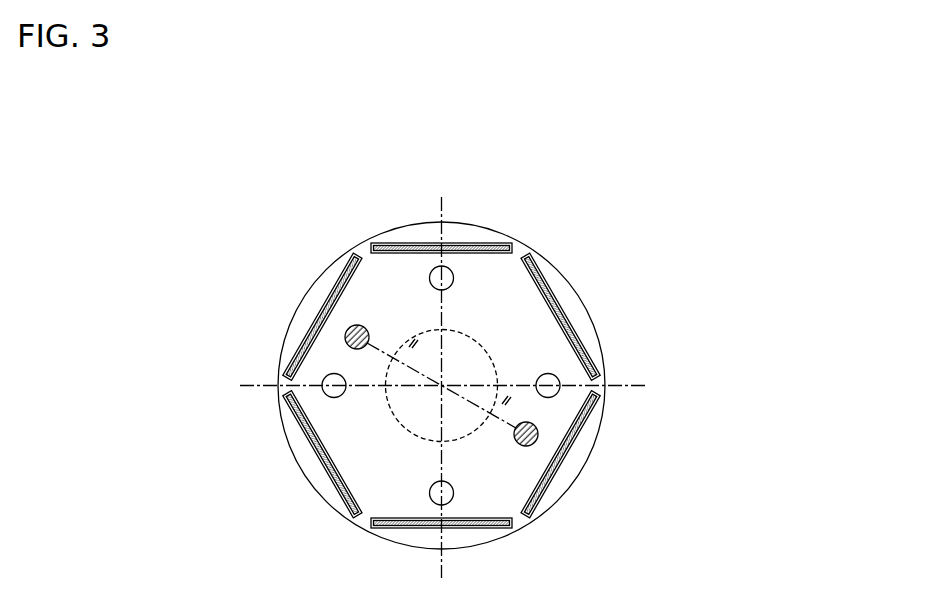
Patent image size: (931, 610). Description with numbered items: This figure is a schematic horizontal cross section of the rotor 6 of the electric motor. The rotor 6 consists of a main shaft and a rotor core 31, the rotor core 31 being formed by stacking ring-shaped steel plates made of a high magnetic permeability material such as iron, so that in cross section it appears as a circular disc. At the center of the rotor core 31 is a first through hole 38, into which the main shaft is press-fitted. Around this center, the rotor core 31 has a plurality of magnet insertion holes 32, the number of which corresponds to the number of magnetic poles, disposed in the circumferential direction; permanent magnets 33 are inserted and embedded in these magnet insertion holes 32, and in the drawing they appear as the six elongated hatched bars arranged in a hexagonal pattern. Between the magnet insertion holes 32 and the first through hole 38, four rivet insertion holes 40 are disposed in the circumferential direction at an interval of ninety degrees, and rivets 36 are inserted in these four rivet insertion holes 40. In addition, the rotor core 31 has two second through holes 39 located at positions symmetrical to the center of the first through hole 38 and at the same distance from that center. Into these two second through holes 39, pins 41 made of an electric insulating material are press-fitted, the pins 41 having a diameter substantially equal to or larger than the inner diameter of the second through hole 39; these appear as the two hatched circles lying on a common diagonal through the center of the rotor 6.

The rotor 6 is at (438, 362).
The rotor core 31 is at (313, 303).
The magnet insertion holes 32 is at (531, 246).
The permanent magnets 33 is at (485, 245).
The rivets 36 is at (448, 275).
The first through hole 38 is at (408, 422).
The second through holes 39 is at (331, 292).
The rivet insertion holes 40 is at (430, 269).
The pins 41 is at (345, 344).